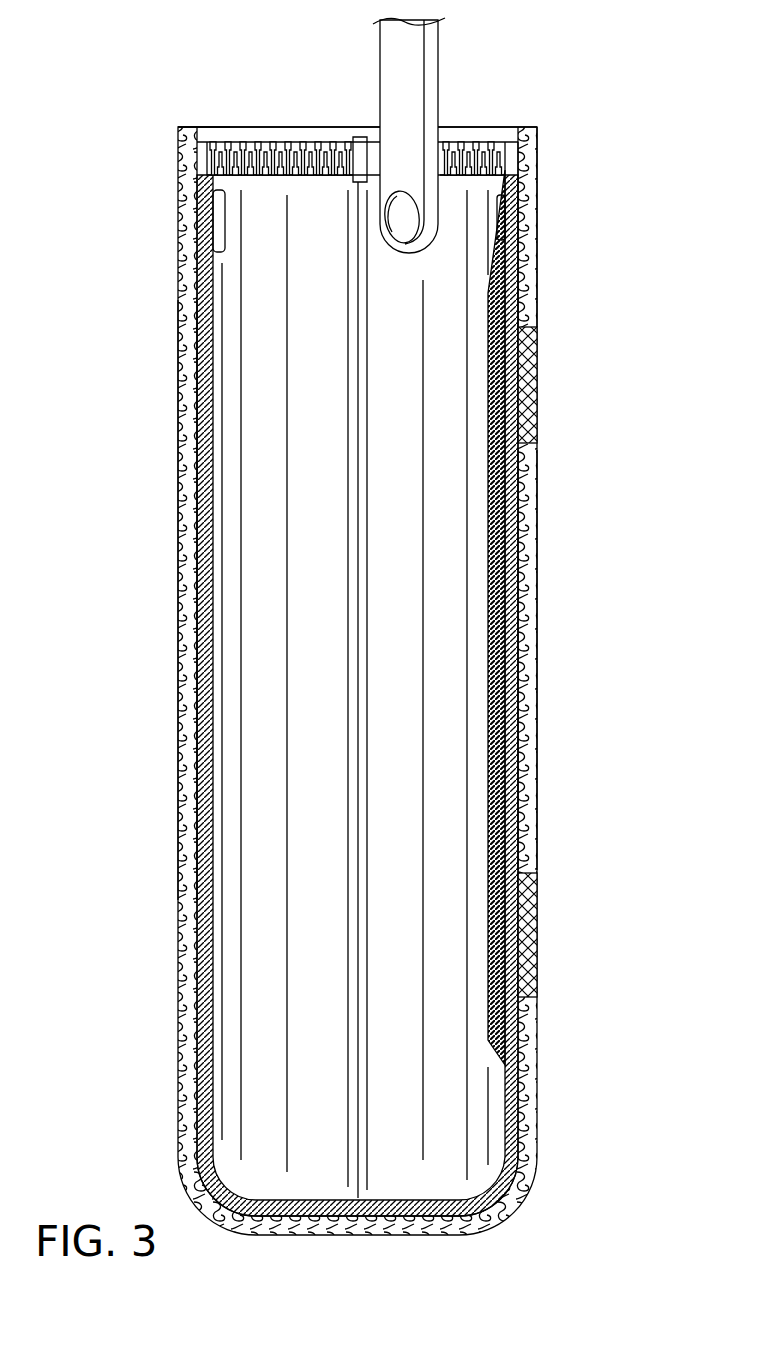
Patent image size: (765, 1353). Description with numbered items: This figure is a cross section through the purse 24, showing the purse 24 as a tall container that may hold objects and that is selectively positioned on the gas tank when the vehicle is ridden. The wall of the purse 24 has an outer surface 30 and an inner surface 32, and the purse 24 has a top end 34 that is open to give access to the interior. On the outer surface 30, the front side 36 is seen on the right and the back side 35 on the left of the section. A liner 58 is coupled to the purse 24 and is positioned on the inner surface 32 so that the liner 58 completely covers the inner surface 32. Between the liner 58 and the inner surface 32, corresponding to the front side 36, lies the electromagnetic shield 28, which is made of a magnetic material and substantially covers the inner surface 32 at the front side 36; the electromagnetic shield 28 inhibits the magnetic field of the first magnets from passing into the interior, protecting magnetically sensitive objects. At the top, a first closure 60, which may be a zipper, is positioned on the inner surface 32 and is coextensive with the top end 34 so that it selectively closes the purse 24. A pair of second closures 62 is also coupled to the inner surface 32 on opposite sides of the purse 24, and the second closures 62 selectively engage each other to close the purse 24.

The purse 24 is at (536, 127).
The electromagnetic shield 28 is at (488, 592).
The outer surface 30 is at (537, 238).
The inner surface 32 is at (494, 182).
The top end 34 is at (192, 127).
The back side 35 is at (178, 637).
The front side 36 is at (537, 628).
The liner 58 is at (490, 477).
The first closure 60 is at (322, 146).
The second closures 62 is at (225, 215).